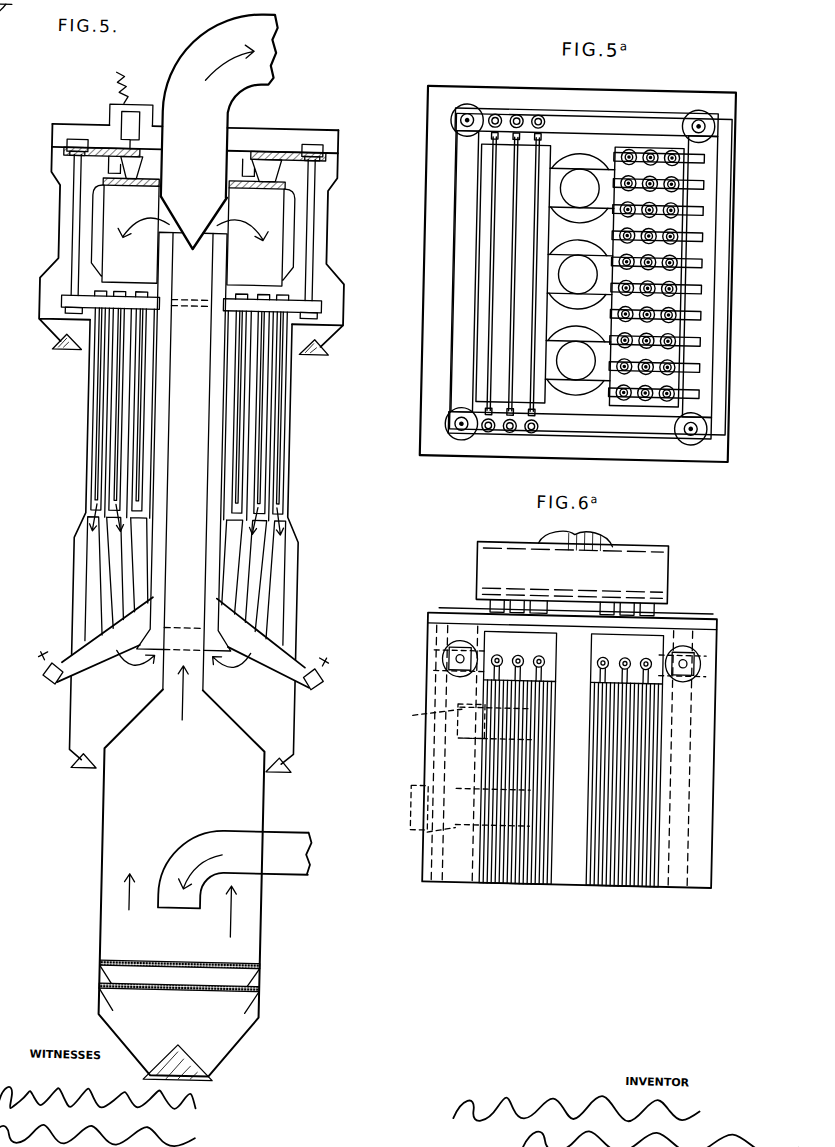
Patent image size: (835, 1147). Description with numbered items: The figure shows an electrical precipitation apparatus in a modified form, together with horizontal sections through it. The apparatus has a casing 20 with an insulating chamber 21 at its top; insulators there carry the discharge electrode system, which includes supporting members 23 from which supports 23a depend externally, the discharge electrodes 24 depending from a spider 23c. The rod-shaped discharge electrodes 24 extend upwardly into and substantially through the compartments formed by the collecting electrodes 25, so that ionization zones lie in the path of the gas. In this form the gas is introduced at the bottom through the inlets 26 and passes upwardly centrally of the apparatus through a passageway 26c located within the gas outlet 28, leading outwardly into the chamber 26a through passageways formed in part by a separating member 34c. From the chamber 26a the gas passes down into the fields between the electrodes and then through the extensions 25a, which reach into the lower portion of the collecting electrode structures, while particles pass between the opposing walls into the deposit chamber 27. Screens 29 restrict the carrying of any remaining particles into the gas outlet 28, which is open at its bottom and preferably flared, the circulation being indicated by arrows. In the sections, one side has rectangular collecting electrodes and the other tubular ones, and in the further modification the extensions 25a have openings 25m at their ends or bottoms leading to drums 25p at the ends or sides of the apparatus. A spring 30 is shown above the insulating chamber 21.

In FIG. 5, the casing 20 is at (346, 290).
In FIG. 5A, the casing 20 is at (703, 226).
In FIG. 6A, the casing 20 is at (712, 731).
In FIG. 5, the insulating chamber 21 is at (291, 138).
In FIG. 5, the supporting members 23 is at (320, 154).
In FIG. 5, the supports 23a is at (69, 243).
In FIG. 5A, the supports 23a is at (442, 116).
In FIG. 6A, the supports 23a is at (443, 656).
In FIG. 5, the spider 23c is at (324, 307).
In FIG. 5A, the spider 23c is at (648, 113).
In FIG. 6A, the spider 23c is at (668, 648).
In FIG. 5, the discharge electrodes 24 is at (147, 464).
In FIG. 5A, the discharge electrodes 24 is at (503, 200).
In FIG. 6A, the discharge electrodes 24 is at (495, 873).
In FIG. 5, the collecting electrodes 25 is at (108, 429).
In FIG. 5A, the collecting electrodes 25 is at (663, 285).
In FIG. 5, the extensions 25a is at (97, 566).
In FIG. 6A, the openings 25m is at (440, 712).
In FIG. 6A, the drums 25p is at (478, 568).
In FIG. 5, the inlets 26 is at (311, 853).
In FIG. 5, the chamber 26a is at (188, 427).
In FIG. 5, the passageway 26c is at (187, 477).
In FIG. 5A, the passageway 26c is at (309, 198).
In FIG. 5, the discharge chamber 27 is at (181, 884).
In FIG. 5, the gas outlet 28 is at (253, 66).
In FIG. 5A, the gas outlet 28 is at (563, 150).
In FIG. 5, the screens 29 is at (256, 966).
In FIG. 5, the spring valve 30 is at (108, 74).
In FIG. 5, the separating member 34c is at (213, 212).